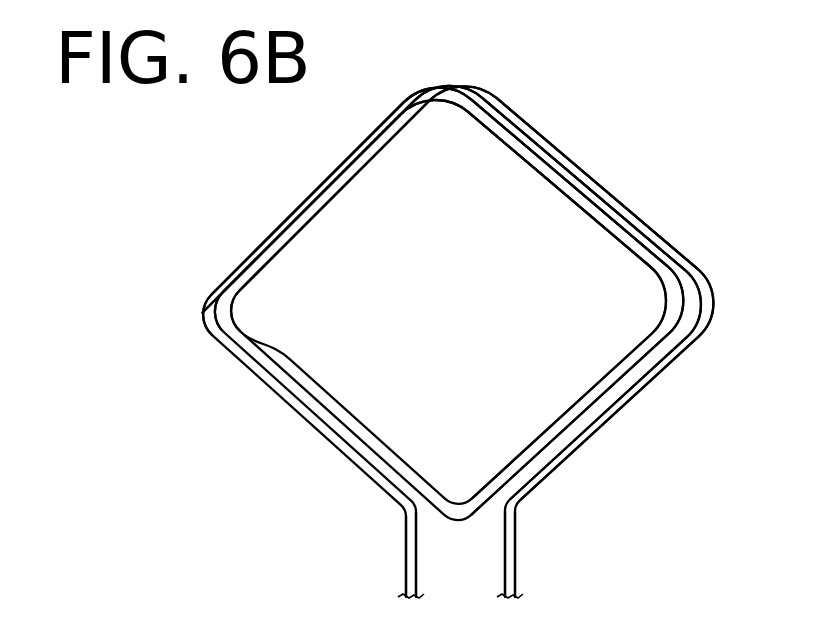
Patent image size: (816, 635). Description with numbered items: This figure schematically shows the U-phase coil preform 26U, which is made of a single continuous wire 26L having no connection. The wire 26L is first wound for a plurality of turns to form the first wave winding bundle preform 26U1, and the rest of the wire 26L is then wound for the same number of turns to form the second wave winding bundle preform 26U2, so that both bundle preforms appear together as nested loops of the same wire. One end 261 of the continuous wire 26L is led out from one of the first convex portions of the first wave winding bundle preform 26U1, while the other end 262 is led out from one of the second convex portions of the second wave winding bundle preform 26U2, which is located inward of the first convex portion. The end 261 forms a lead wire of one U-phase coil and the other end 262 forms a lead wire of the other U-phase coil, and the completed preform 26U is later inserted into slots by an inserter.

The U-phase coil preform 26U is at (161, 319).
The first wave winding bundle preform 26U1 is at (313, 192).
The second wave winding bundle preform 26U2 is at (690, 199).
The wire 26L is at (583, 404).
The one end of the continuous wire 261 is at (406, 565).
The other end of the continuous wire 262 is at (515, 562).